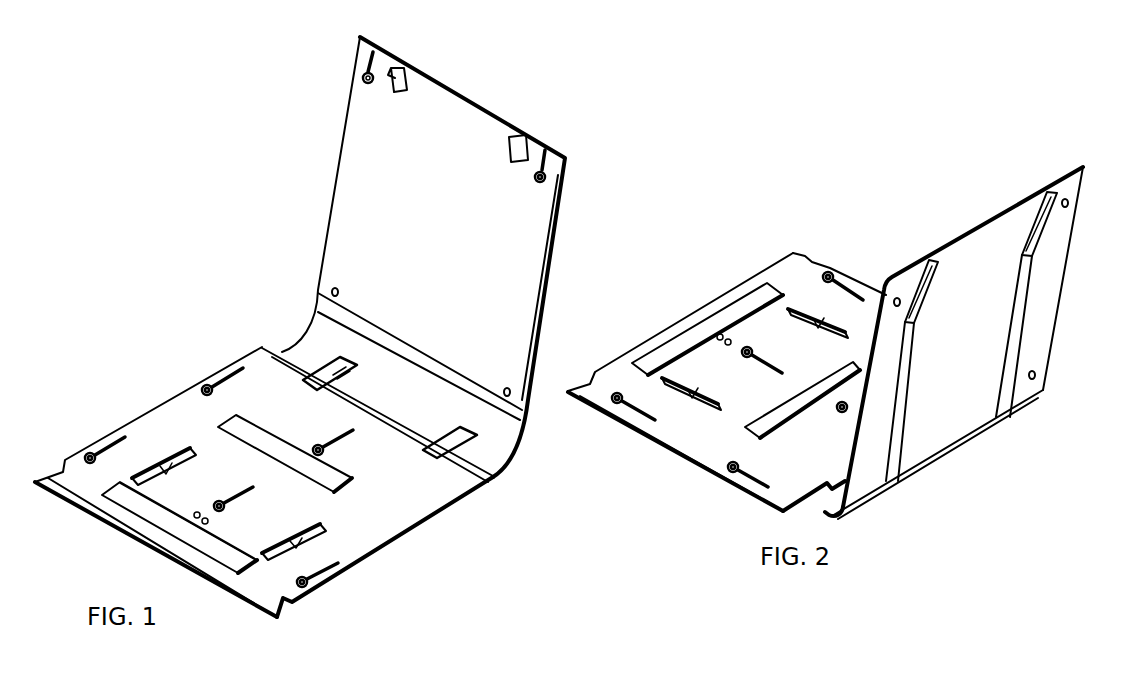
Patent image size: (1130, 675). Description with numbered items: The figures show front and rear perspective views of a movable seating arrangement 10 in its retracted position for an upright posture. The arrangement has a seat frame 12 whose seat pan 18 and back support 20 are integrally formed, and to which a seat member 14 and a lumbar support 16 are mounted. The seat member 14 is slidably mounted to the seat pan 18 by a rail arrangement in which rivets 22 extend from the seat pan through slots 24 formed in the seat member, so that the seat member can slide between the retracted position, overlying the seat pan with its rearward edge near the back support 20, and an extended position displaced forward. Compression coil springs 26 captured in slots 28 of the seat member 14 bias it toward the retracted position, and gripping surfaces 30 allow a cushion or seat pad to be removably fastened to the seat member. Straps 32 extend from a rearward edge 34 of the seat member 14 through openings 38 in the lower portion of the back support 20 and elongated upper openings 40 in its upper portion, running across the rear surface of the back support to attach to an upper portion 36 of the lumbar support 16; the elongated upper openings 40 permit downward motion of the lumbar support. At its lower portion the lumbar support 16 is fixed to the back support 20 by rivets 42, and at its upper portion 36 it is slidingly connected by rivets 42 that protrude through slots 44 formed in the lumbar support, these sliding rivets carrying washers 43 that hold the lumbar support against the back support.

In FIG. 1, the movable seating arrangement 10 is at (258, 258).
In FIG. 2, the movable seating arrangement 10 is at (877, 197).
In FIG. 1, the seat frame 12 is at (548, 280).
In FIG. 2, the seat frame 12 is at (824, 508).
In FIG. 1, the seat member 14 is at (496, 490).
In FIG. 2, the seat member 14 is at (700, 448).
In FIG. 1, the lumbar support 16 is at (358, 163).
In FIG. 2, the lumbar support 16 is at (848, 422).
In FIG. 1, the seat pan 18 is at (297, 608).
In FIG. 2, the seat pan 18 is at (577, 382).
In FIG. 1, the back support 20 is at (563, 222).
In FIG. 2, the back support 20 is at (968, 252).
In FIG. 1, the rivets 22 is at (318, 592).
In FIG. 2, the rivets 22 is at (829, 271).
In FIG. 1, the slots 24 is at (340, 570).
In FIG. 2, the slots 24 is at (851, 283).
In FIG. 1, the compression coil springs 26 is at (164, 460).
In FIG. 2, the compression coil springs 26 is at (795, 310).
In FIG. 1, the slots 28 is at (296, 533).
In FIG. 2, the slots 28 is at (820, 325).
In FIG. 1, the gripping surfaces 30 is at (145, 510).
In FIG. 2, the gripping surfaces 30 is at (685, 325).
In FIG. 1, the straps 32 is at (509, 147).
In FIG. 2, the straps 32 is at (1020, 316).
In FIG. 1, the rearward edge 34 is at (276, 350).
In FIG. 1, the upper portion 36 is at (401, 68).
In FIG. 1, the openings 38 is at (338, 365).
In FIG. 2, the upper openings 40 is at (928, 266).
In FIG. 1, the rivets 42 is at (336, 288).
In FIG. 2, the rivets 42 is at (1068, 203).
In FIG. 1, the washers 43 is at (376, 84).
In FIG. 1, the slots 44 is at (374, 44).